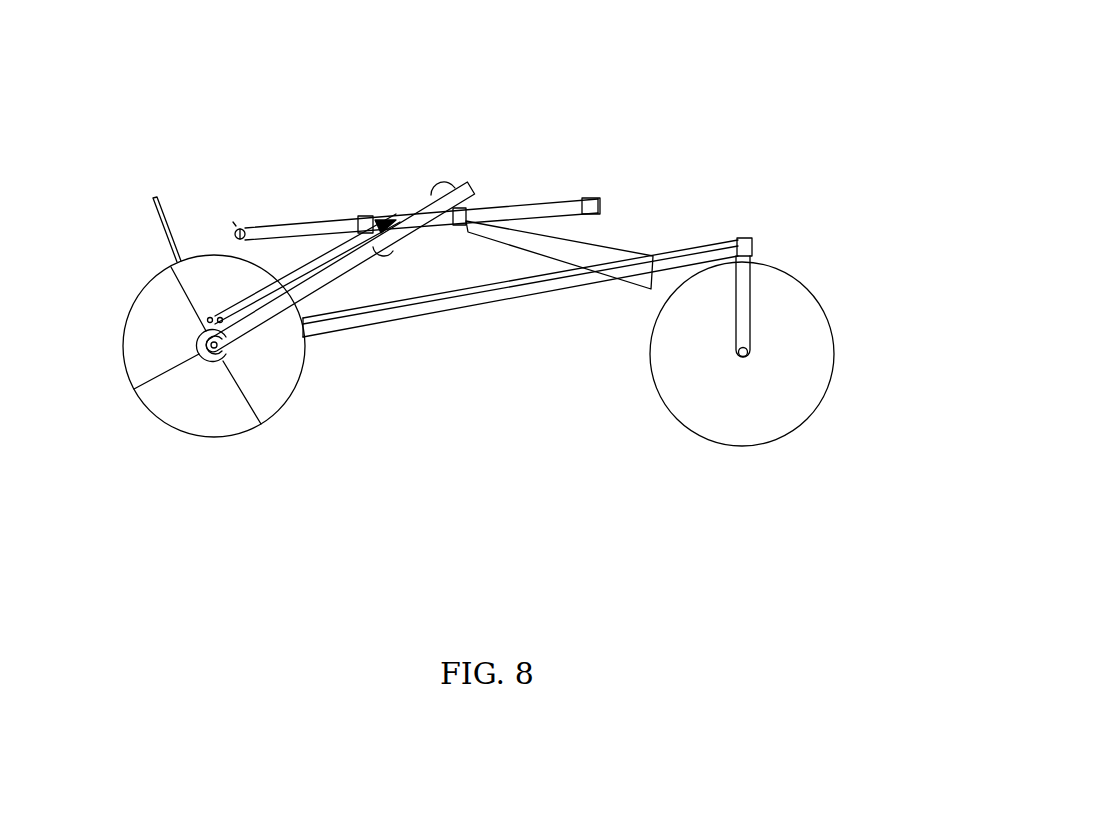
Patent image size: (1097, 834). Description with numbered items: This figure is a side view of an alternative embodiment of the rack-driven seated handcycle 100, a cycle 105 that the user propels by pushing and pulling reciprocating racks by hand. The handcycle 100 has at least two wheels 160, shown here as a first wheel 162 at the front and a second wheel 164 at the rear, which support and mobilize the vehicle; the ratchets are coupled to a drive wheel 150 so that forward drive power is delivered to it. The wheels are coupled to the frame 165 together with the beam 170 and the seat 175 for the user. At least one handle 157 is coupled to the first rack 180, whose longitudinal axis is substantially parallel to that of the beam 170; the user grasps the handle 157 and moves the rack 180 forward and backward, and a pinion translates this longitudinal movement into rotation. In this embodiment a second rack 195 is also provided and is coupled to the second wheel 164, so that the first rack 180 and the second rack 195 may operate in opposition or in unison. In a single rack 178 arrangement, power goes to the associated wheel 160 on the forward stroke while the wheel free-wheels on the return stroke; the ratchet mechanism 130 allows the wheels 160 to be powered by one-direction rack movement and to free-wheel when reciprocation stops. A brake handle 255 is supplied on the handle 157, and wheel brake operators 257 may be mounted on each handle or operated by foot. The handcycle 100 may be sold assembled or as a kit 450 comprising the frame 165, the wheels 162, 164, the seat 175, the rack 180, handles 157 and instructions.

The rack-driven seated handcycle 100 is at (633, 57).
The cycle 105 is at (663, 80).
The kit 450 is at (686, 113).
The ratchet mechanism 130 is at (207, 362).
The drive wheel 150 is at (122, 373).
The handle 157 is at (255, 230).
The wheel 160 is at (828, 327).
The first wheel 162 is at (798, 288).
The second wheel 164 is at (289, 401).
The frame 165 is at (502, 292).
The beam 170 is at (470, 294).
The seat 175 is at (156, 198).
The rack 178 is at (601, 206).
The first rack 180 is at (580, 206).
The second rack 195 is at (522, 205).
The brake handle 255 is at (236, 227).
The wheel brake operator 257 is at (242, 227).